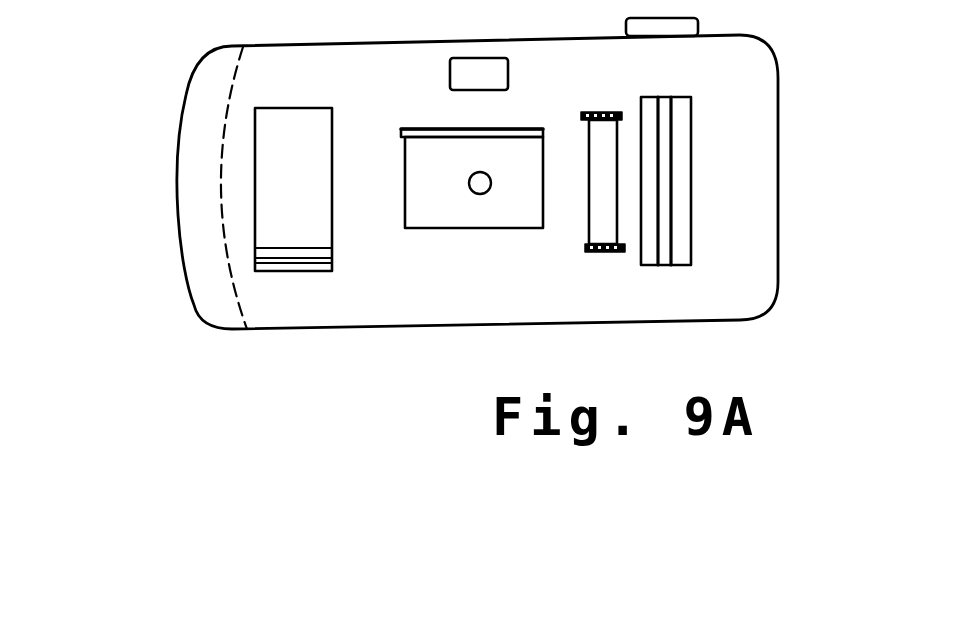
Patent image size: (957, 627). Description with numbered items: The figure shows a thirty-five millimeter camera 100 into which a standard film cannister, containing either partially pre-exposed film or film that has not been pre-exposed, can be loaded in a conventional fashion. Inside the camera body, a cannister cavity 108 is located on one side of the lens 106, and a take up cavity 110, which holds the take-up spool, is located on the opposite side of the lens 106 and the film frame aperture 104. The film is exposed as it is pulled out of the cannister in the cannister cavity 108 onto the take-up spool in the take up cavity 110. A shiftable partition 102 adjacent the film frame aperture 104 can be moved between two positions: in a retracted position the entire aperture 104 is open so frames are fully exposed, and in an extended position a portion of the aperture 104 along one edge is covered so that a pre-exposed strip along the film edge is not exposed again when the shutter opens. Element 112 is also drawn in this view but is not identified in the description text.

The 35 mm camera 100 is at (124, 113).
The shiftable partition 102 is at (430, 133).
The film frame aperture 104 is at (435, 208).
The lens 106 is at (479, 186).
The cannister cavity 108 is at (280, 206).
The take up cavity 110 is at (672, 265).
The battery 112 is at (663, 167).